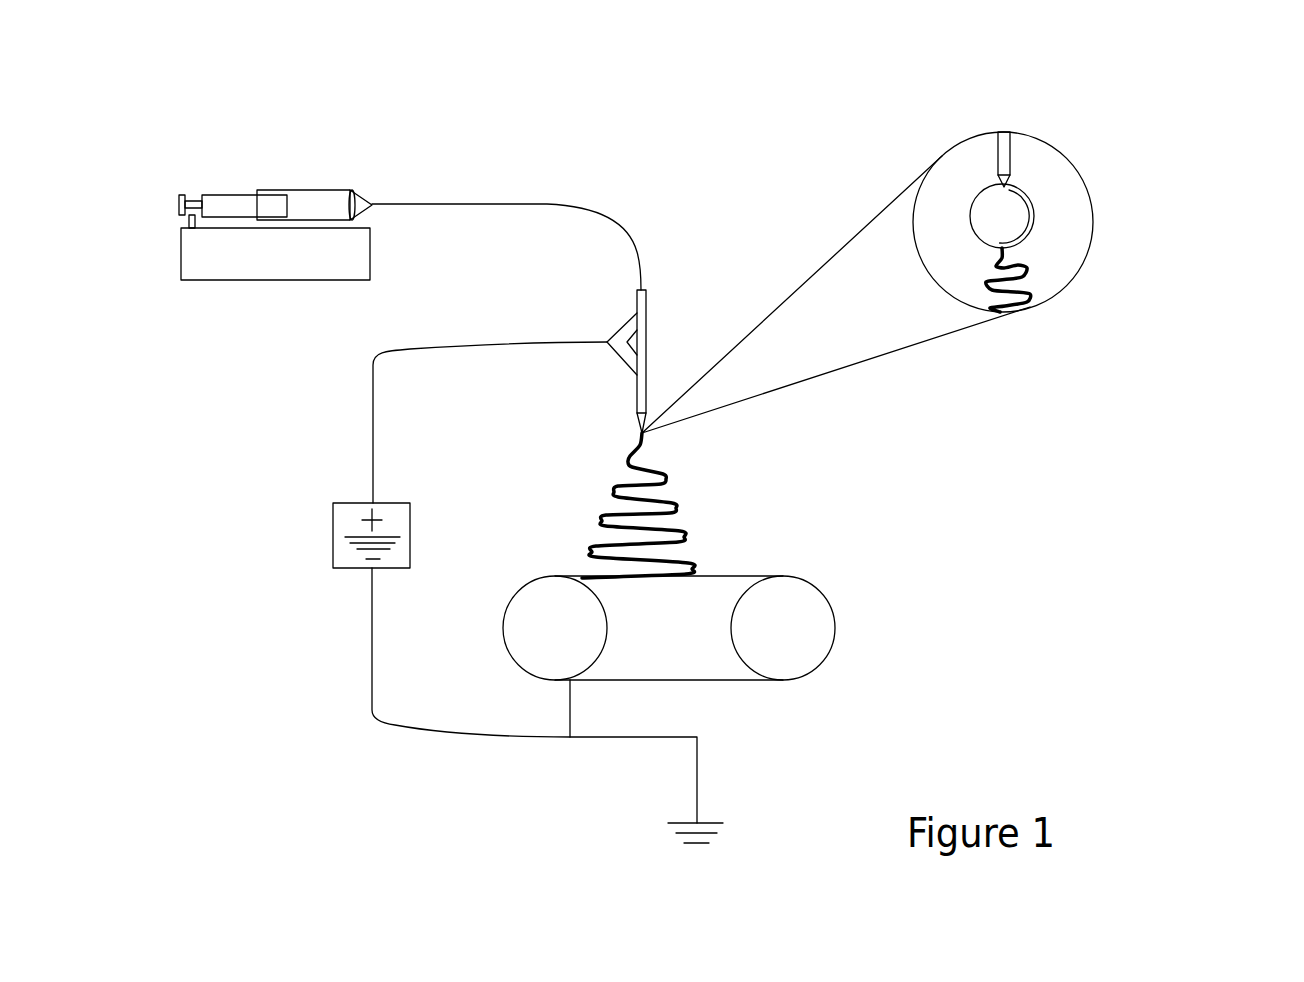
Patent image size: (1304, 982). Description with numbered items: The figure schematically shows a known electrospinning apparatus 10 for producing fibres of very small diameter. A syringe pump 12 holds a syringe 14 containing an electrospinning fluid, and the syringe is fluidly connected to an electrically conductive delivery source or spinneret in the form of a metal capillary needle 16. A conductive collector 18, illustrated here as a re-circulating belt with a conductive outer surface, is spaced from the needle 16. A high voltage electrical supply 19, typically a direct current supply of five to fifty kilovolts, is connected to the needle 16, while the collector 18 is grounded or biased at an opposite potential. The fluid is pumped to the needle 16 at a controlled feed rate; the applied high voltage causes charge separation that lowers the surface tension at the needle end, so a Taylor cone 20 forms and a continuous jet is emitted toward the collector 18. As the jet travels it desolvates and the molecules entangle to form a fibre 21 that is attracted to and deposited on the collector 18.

The electrospinning apparatus 10 is at (1108, 377).
The syringe pump 12 is at (252, 280).
The syringe 14 is at (308, 190).
The metal capillary needle 16 is at (647, 327).
The conductive collector 18 is at (833, 612).
The high voltage electrical supply 19 is at (343, 568).
The Taylor cone 20 is at (1035, 203).
The fibre 21 is at (651, 448).